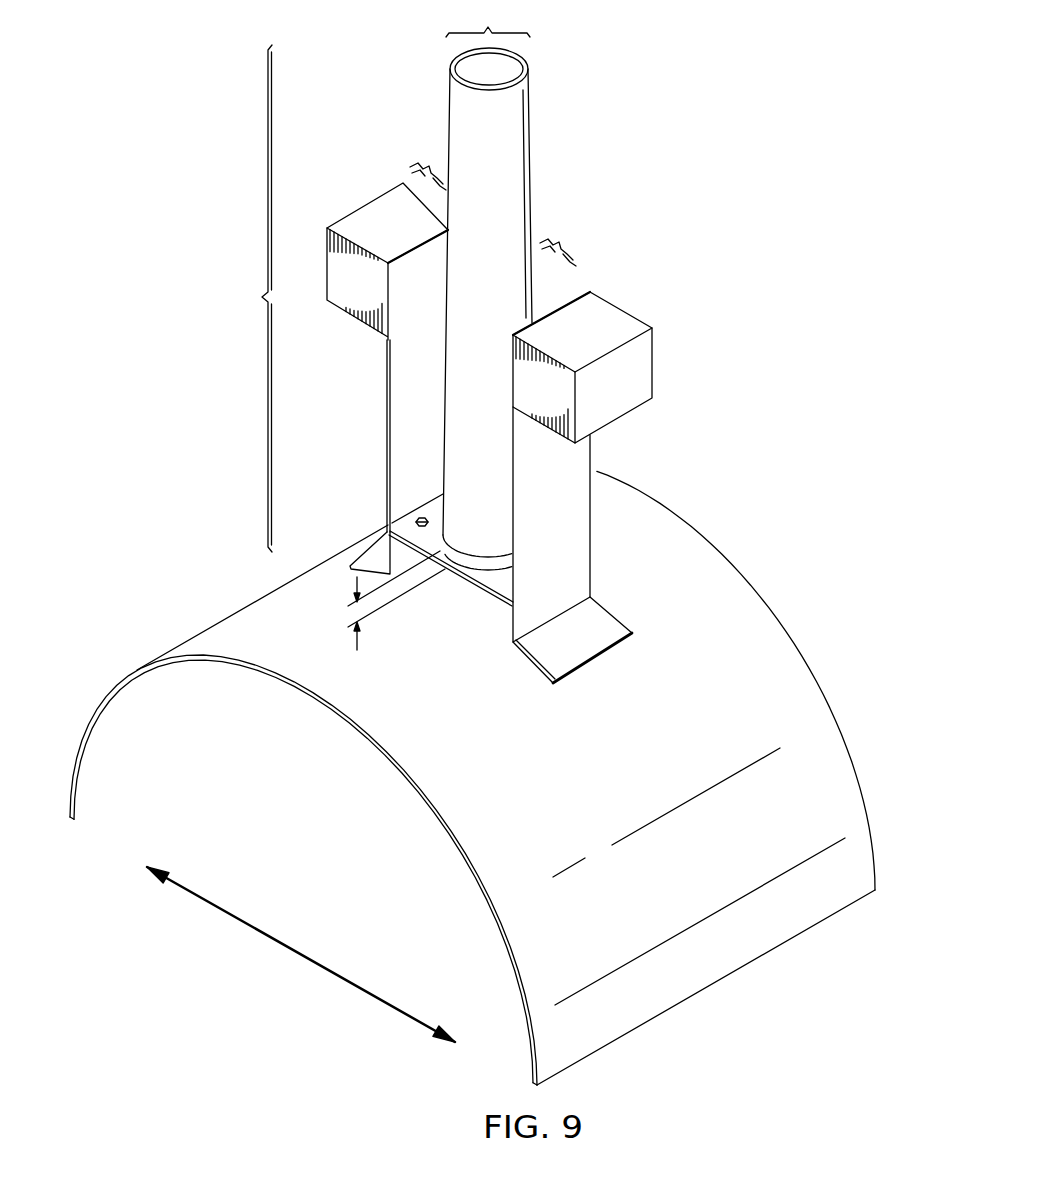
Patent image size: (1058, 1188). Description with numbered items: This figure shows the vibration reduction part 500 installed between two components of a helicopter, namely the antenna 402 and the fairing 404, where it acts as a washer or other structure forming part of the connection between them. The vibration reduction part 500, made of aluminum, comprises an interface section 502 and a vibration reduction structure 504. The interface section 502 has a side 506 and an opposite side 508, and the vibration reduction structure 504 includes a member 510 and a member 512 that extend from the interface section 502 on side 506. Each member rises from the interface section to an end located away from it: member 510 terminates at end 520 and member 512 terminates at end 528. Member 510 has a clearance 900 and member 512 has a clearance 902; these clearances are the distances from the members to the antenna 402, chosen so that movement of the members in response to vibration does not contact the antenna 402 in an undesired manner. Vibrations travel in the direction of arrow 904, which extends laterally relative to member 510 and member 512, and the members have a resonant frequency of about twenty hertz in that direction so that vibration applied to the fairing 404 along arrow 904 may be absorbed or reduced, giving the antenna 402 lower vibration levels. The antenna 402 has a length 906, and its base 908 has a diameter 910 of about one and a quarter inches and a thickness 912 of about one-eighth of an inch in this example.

The antenna 402 is at (448, 103).
The fairing 404 is at (766, 605).
The vibration reduction part 500 is at (506, 420).
The interface section 502 is at (400, 517).
The vibration reduction structure 504 is at (624, 305).
The side 506 is at (503, 587).
The side 508 is at (470, 578).
The member 510 is at (387, 369).
The member 512 is at (582, 530).
The end 520 is at (358, 214).
The end 528 is at (643, 358).
The clearance 900 is at (427, 162).
The clearance 902 is at (558, 238).
The arrow 904 is at (300, 955).
The length 906 is at (246, 298).
The base 908 is at (612, 627).
The diameter 910 is at (488, 18).
The thickness 912 is at (357, 650).